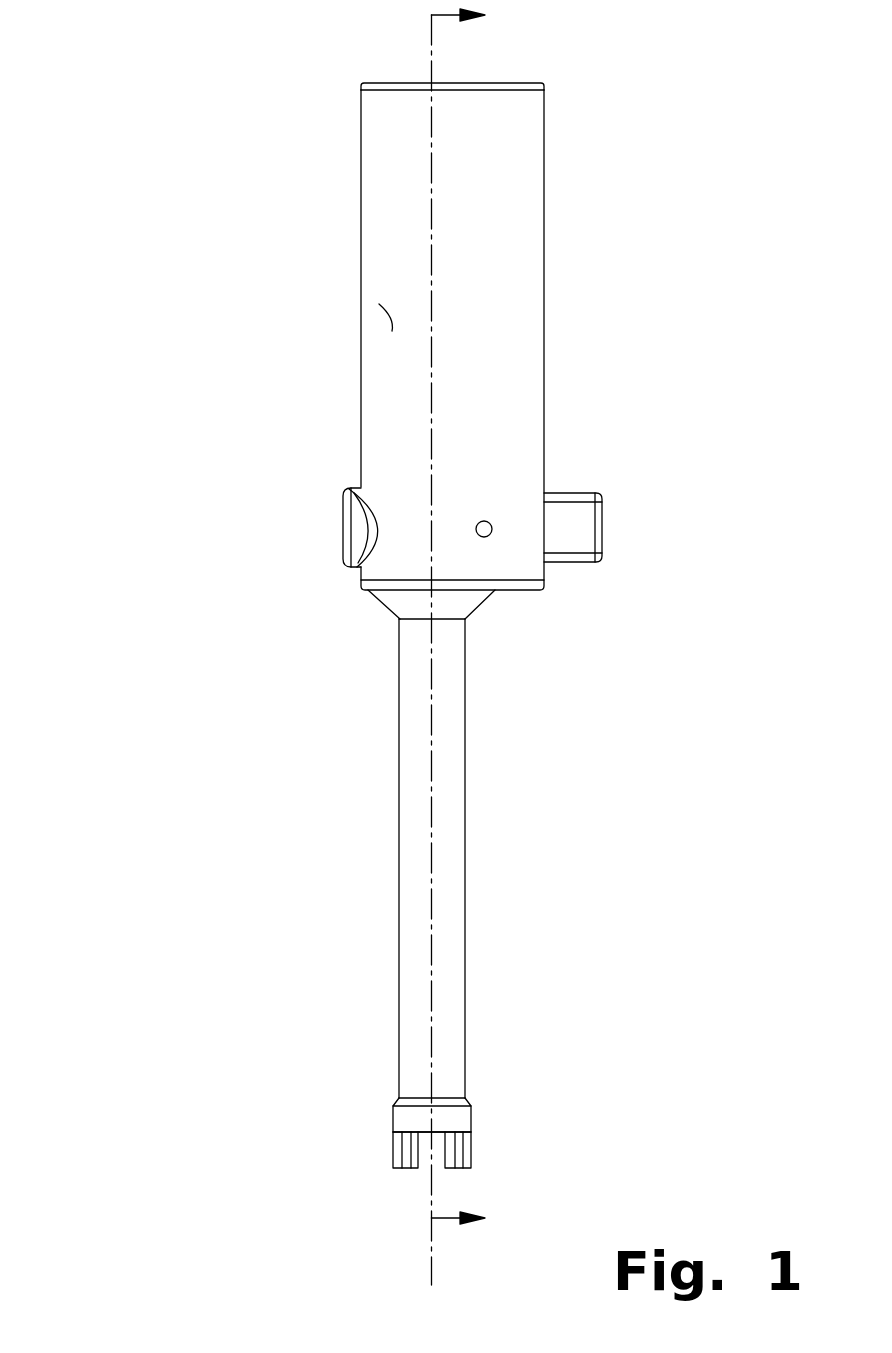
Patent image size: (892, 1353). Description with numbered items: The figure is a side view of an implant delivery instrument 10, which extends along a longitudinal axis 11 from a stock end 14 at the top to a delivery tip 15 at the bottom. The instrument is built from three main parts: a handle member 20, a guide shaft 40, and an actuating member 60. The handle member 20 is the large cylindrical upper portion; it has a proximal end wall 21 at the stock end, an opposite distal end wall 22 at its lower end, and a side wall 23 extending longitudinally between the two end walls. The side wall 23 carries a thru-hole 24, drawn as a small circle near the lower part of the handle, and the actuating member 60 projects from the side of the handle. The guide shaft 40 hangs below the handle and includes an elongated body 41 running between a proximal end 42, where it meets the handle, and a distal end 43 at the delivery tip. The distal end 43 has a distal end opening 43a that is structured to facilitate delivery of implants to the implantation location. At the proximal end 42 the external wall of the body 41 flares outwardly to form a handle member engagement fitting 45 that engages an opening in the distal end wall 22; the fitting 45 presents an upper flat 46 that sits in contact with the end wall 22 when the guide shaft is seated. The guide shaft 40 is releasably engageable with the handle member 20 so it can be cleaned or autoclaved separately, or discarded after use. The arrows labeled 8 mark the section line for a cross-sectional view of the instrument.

The section line 8- 8 is at (468, 621).
The delivery instrument 10 is at (168, 146).
The longitudinal axis 11 is at (433, 152).
The stock end 14 is at (541, 84).
The delivery tip 15 is at (471, 1155).
The handle member 20 is at (546, 267).
The proximal end wall 21 is at (390, 81).
The distal end wall 22 is at (586, 563).
The side wall 23 is at (383, 325).
The thru-hole 24 is at (486, 521).
The guide shaft 40 is at (398, 793).
The elongated body 41 is at (458, 868).
The proximal end 42 is at (398, 632).
The distal end 43 is at (471, 1118).
The distal end opening 43a is at (428, 1165).
The handle member engagement fitting 45 is at (370, 600).
The upper flat 46 is at (472, 592).
The actuating member 60 is at (606, 527).